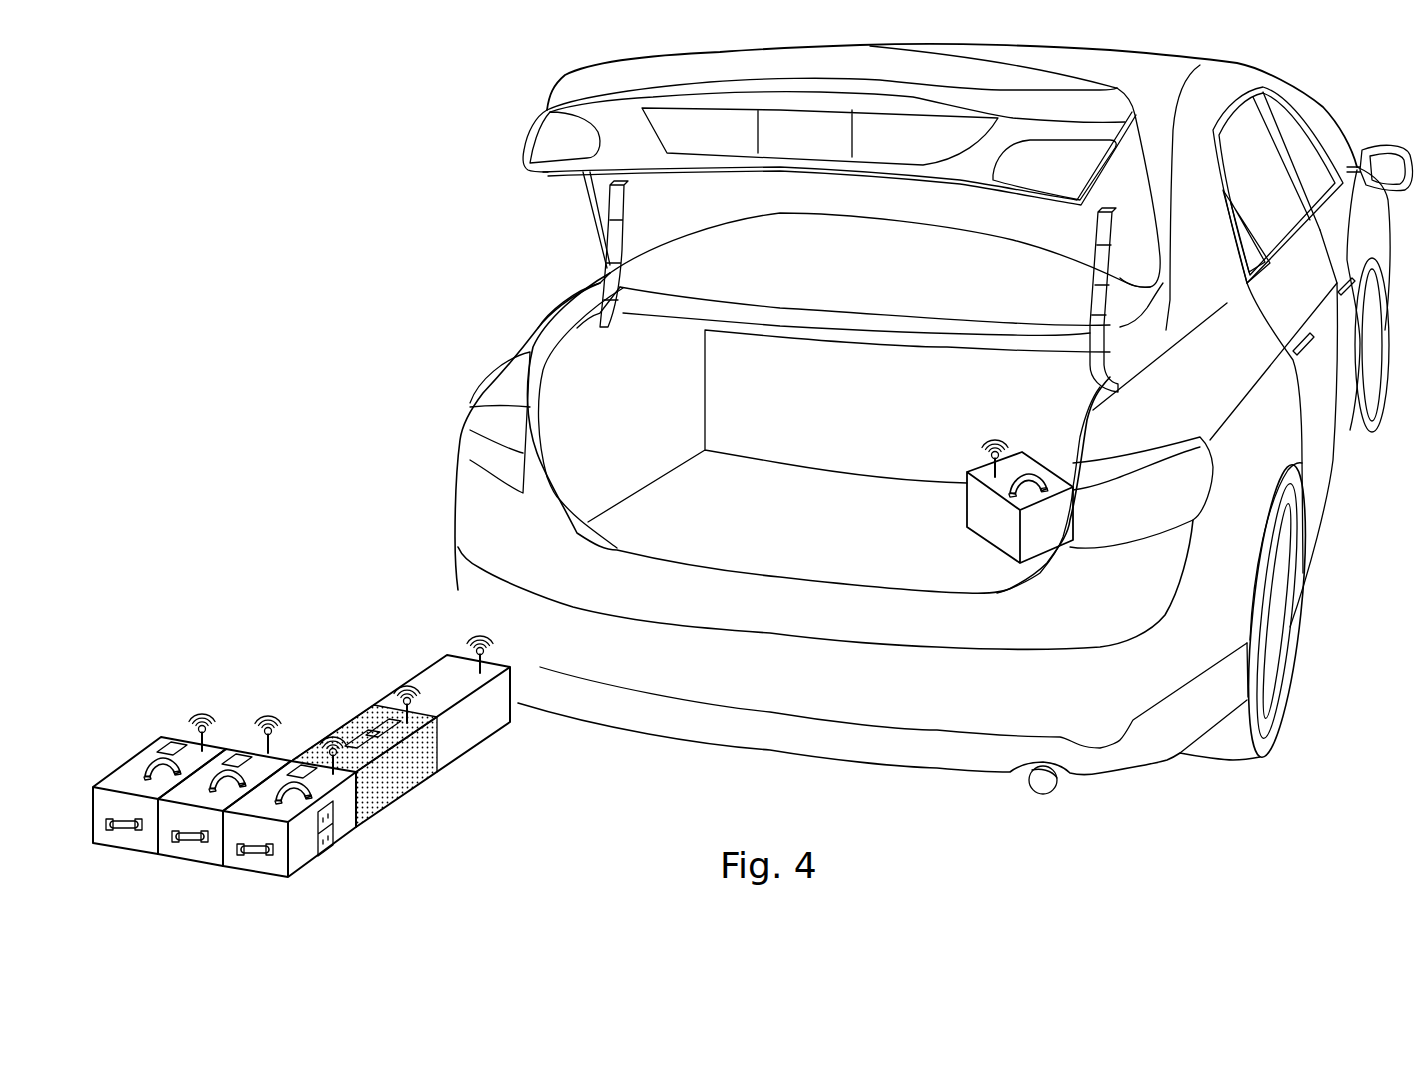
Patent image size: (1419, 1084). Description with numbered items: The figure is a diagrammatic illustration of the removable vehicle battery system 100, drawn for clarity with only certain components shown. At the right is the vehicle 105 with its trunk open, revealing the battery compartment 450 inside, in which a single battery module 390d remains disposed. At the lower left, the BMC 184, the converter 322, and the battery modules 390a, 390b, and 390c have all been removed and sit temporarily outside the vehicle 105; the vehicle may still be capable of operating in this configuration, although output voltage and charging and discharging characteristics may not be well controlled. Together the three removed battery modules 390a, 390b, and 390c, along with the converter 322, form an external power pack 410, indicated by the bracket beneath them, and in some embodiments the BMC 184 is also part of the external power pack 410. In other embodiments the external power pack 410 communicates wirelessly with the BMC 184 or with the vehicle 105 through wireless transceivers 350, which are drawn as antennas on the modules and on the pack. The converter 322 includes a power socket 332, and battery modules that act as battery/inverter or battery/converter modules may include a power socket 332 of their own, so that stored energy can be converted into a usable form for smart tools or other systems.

The removable vehicle battery system 100 is at (300, 413).
The vehicle 105 is at (1302, 97).
The BMC 184 is at (478, 732).
The converter 322 is at (400, 792).
The power socket 332 is at (368, 732).
The wireless transceivers 350 is at (402, 682).
The battery module 390a is at (142, 763).
The battery module 390b is at (190, 853).
The battery module 390c is at (265, 867).
The battery module 390d is at (965, 497).
The external power pack 410 is at (512, 915).
The battery compartment 450 is at (782, 538).